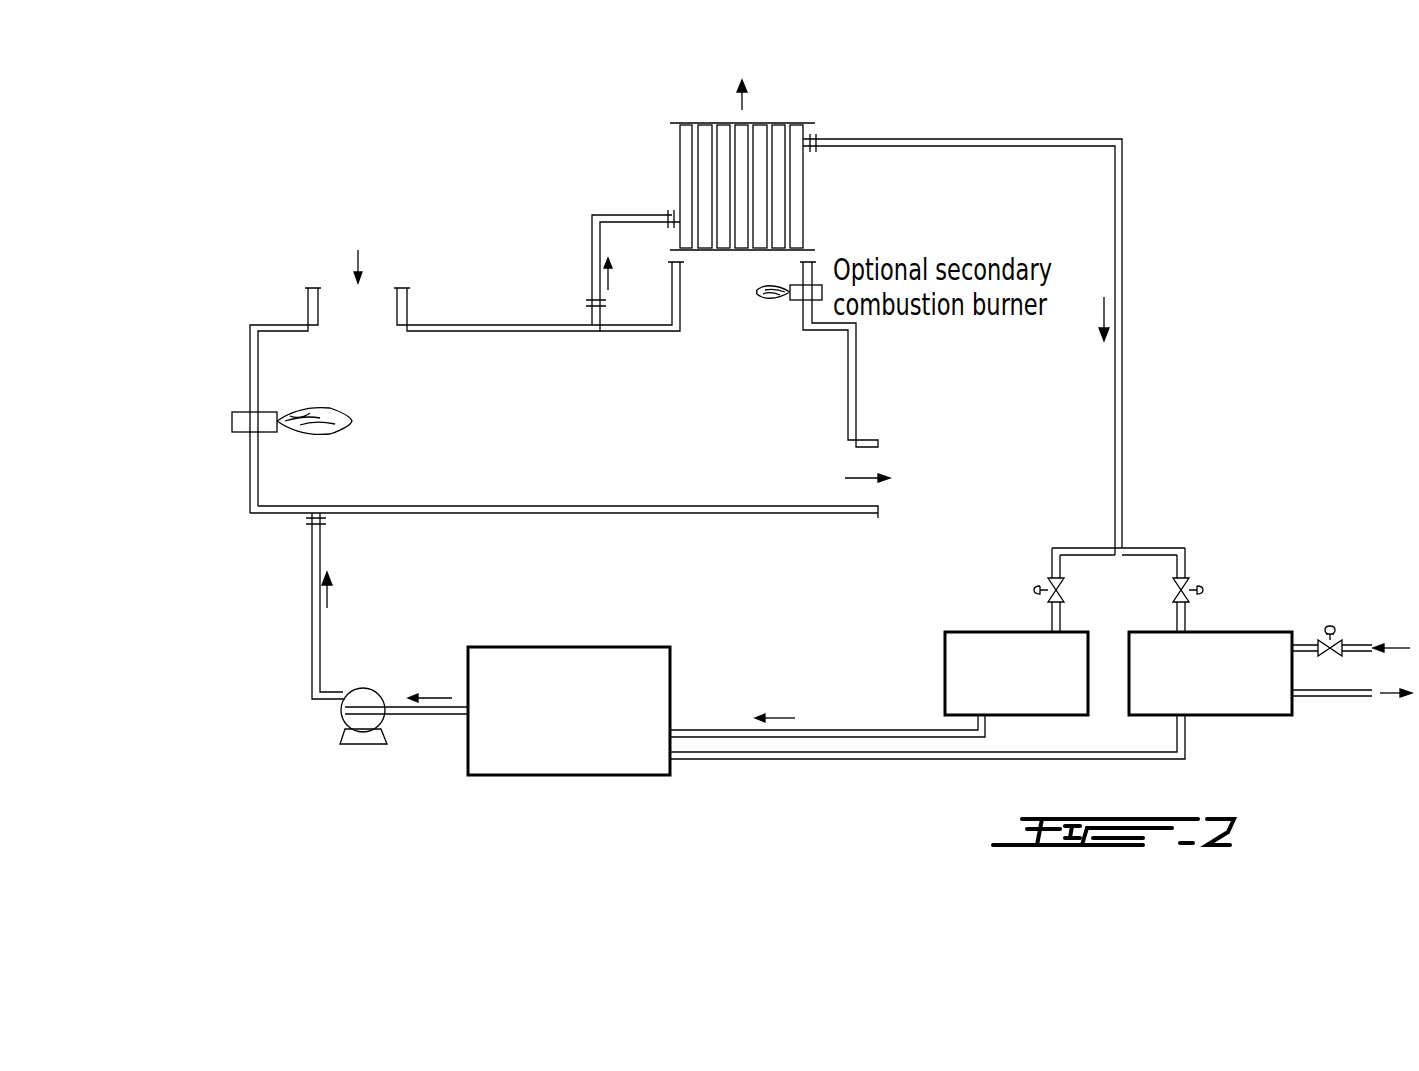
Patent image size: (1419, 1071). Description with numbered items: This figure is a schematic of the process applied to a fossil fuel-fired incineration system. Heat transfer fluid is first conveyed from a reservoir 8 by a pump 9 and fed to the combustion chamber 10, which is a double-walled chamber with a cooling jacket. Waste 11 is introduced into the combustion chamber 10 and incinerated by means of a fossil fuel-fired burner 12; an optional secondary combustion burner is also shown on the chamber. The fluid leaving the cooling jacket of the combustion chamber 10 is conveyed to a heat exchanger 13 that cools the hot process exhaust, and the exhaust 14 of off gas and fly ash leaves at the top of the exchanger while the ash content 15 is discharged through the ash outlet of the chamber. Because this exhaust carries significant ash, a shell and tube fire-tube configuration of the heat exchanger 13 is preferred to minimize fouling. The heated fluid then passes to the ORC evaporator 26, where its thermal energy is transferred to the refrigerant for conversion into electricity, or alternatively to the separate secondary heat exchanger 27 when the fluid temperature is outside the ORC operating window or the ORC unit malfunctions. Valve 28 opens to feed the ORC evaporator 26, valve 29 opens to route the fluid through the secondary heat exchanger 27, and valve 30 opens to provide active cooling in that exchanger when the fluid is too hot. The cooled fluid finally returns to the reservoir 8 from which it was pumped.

The reservoir 8 is at (572, 755).
The pump 9 is at (370, 700).
The combustion chamber 10 is at (682, 435).
The waste 11 is at (332, 293).
The fossil fuel-fired burner 12 is at (240, 433).
The heat exchanger 13 is at (806, 172).
The exhaust 14 is at (735, 100).
The ash content 15 is at (877, 494).
The ORC evaporator 26 is at (960, 650).
The secondary heat exchanger 27 is at (1233, 712).
The valve 28 is at (1050, 580).
The valve 29 is at (1190, 583).
The valve 30 is at (1338, 640).